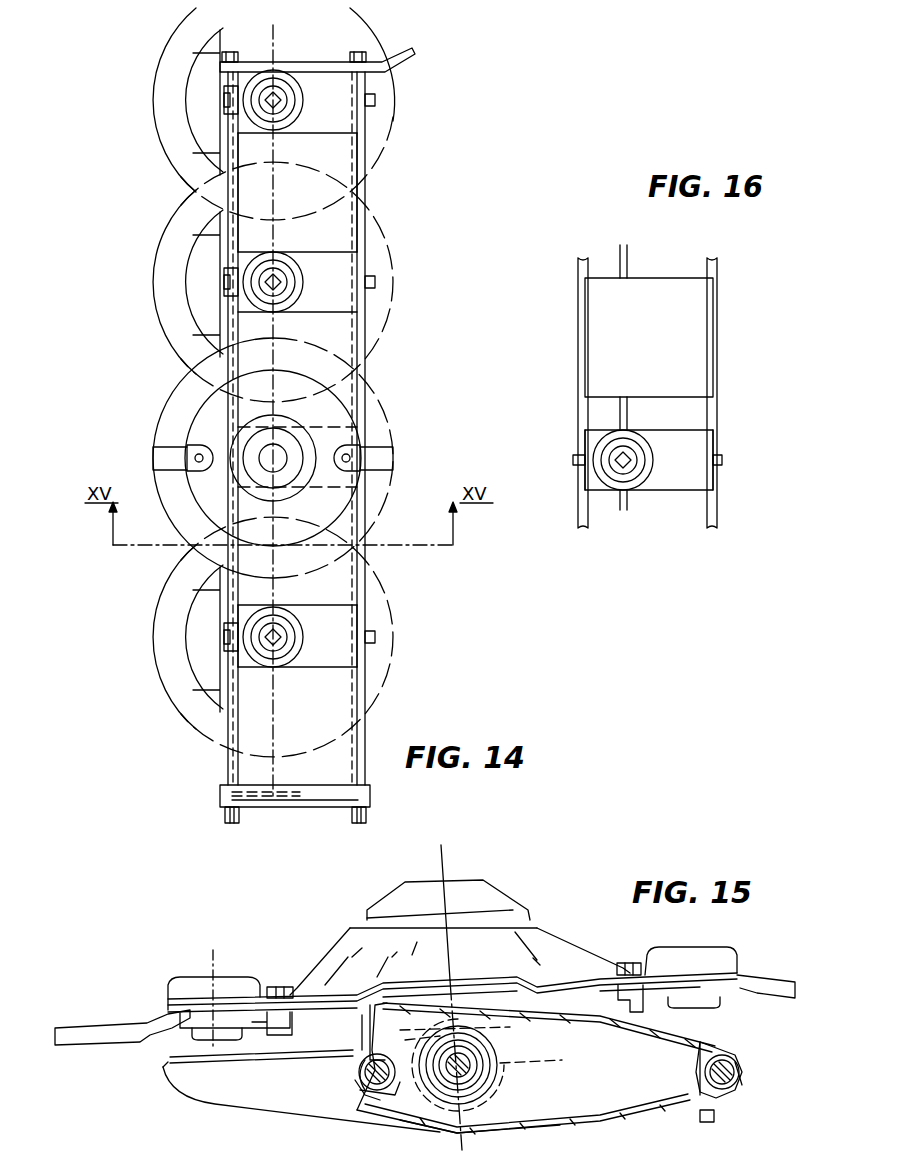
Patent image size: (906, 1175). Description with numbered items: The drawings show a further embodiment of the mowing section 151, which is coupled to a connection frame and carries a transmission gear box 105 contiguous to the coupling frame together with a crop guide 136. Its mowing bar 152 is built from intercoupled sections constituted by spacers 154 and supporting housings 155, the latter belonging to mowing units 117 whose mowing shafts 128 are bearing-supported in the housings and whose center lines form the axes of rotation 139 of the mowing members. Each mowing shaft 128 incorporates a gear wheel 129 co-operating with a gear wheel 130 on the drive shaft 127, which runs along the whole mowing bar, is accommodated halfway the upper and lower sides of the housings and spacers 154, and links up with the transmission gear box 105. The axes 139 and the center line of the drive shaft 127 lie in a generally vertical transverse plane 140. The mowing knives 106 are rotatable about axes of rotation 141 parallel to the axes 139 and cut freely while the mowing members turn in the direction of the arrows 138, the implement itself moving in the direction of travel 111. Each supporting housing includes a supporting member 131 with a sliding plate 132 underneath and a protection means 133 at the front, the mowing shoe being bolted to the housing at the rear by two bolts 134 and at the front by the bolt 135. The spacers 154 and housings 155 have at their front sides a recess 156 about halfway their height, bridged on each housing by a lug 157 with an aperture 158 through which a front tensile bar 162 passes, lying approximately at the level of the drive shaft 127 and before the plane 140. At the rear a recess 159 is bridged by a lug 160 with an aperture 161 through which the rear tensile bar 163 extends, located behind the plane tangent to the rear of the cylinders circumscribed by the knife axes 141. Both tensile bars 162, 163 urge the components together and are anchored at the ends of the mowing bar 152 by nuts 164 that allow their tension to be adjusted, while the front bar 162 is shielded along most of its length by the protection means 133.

In FIG. 14, the transmission gear box 105 is at (340, 798).
In FIG. 14, the mowing knives 106 is at (163, 446).
In FIG. 15, the mowing knives 106 is at (82, 1028).
In FIG. 14, the direction of travel 111 is at (150, 768).
In FIG. 15, the direction of travel 111 is at (110, 1082).
In FIG. 14, the mowing unit 117 is at (340, 663).
In FIG. 16, the mowing unit 117 is at (690, 472).
In FIG. 16, the drive shaft 127 is at (618, 248).
In FIG. 15, the drive shaft 127 is at (468, 1070).
In FIG. 14, the mowing shaft 128 is at (280, 93).
In FIG. 16, the mowing shaft 128 is at (632, 452).
In FIG. 15, the gear wheel 129 is at (497, 1033).
In FIG. 15, the gear wheel 130 is at (507, 1063).
In FIG. 14, the supporting member 131 is at (192, 162).
In FIG. 15, the supporting member 131 is at (300, 1094).
In FIG. 15, the sliding plate 132 is at (540, 1133).
In FIG. 14, the protection means 133 is at (190, 120).
In FIG. 15, the protection means 133 is at (168, 1060).
In FIG. 15, the bolts 134 is at (715, 1116).
In FIG. 15, the bolt 135 is at (360, 1022).
In FIG. 14, the crop guide 136 is at (405, 62).
In FIG. 14, the arrows 138 is at (130, 118).
In FIG. 14, the axes of rotation 139 is at (273, 272).
In FIG. 16, the axes of rotation 139 is at (612, 466).
In FIG. 14, the plane 140 is at (273, 33).
In FIG. 15, the plane 140 is at (449, 850).
In FIG. 15, the axes of rotation 141 is at (213, 963).
In FIG. 14, the mowing section 151 is at (372, 458).
In FIG. 15, the mowing section 151 is at (547, 900).
In FIG. 14, the mowing bar 152 is at (390, 140).
In FIG. 14, the spacers 154 is at (342, 163).
In FIG. 16, the spacers 154 is at (670, 290).
In FIG. 15, the spacers 154 is at (690, 1035).
In FIG. 14, the supporting housings 155 is at (348, 125).
In FIG. 16, the supporting housings 155 is at (708, 445).
In FIG. 15, the recess 156 is at (385, 1105).
In FIG. 16, the lug 157 is at (572, 460).
In FIG. 15, the lug 157 is at (338, 1096).
In FIG. 15, the aperture 158 is at (370, 1092).
In FIG. 15, the recess 159 is at (700, 1078).
In FIG. 14, the lug 160 is at (375, 104).
In FIG. 16, the lug 160 is at (722, 462).
In FIG. 15, the lug 160 is at (745, 1070).
In FIG. 15, the aperture 161 is at (733, 1058).
In FIG. 14, the tensile bar 162 is at (238, 731).
In FIG. 16, the tensile bar 162 is at (578, 520).
In FIG. 15, the tensile bar 162 is at (352, 1080).
In FIG. 14, the tensile bar 163 is at (362, 735).
In FIG. 16, the tensile bar 163 is at (712, 520).
In FIG. 15, the tensile bar 163 is at (728, 1080).
In FIG. 14, the nuts 164 is at (366, 56).